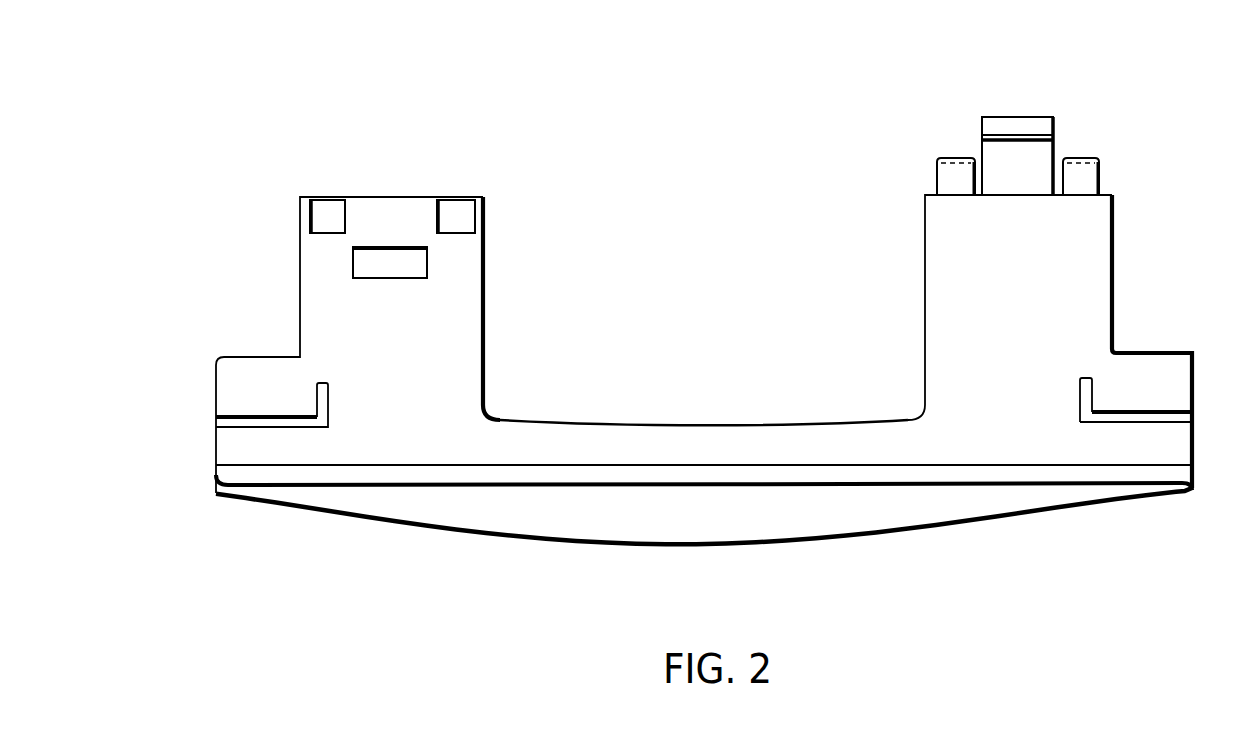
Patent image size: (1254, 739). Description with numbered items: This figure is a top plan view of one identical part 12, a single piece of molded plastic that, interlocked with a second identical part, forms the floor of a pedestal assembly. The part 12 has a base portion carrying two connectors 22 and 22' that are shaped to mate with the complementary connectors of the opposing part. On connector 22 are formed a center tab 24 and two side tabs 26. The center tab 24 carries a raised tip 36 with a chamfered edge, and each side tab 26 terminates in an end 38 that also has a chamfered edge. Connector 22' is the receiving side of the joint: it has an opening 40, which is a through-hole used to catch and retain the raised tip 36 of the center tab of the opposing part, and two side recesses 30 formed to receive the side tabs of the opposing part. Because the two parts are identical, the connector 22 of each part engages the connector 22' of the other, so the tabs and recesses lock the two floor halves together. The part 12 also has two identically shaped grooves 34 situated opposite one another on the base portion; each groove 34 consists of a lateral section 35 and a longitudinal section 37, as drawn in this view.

The identical part 12 is at (1119, 509).
The connector 22 is at (1050, 341).
The connector 22' is at (344, 345).
The center tab 24 is at (1042, 157).
The side tabs 26 is at (948, 178).
The side recesses 30 is at (310, 220).
The grooves 34 is at (280, 410).
The lateral section 35 is at (1079, 399).
The raised tip 36 is at (1034, 128).
The longitudinal section 37 is at (1168, 418).
The end 38 is at (1093, 158).
The opening 40 is at (423, 258).